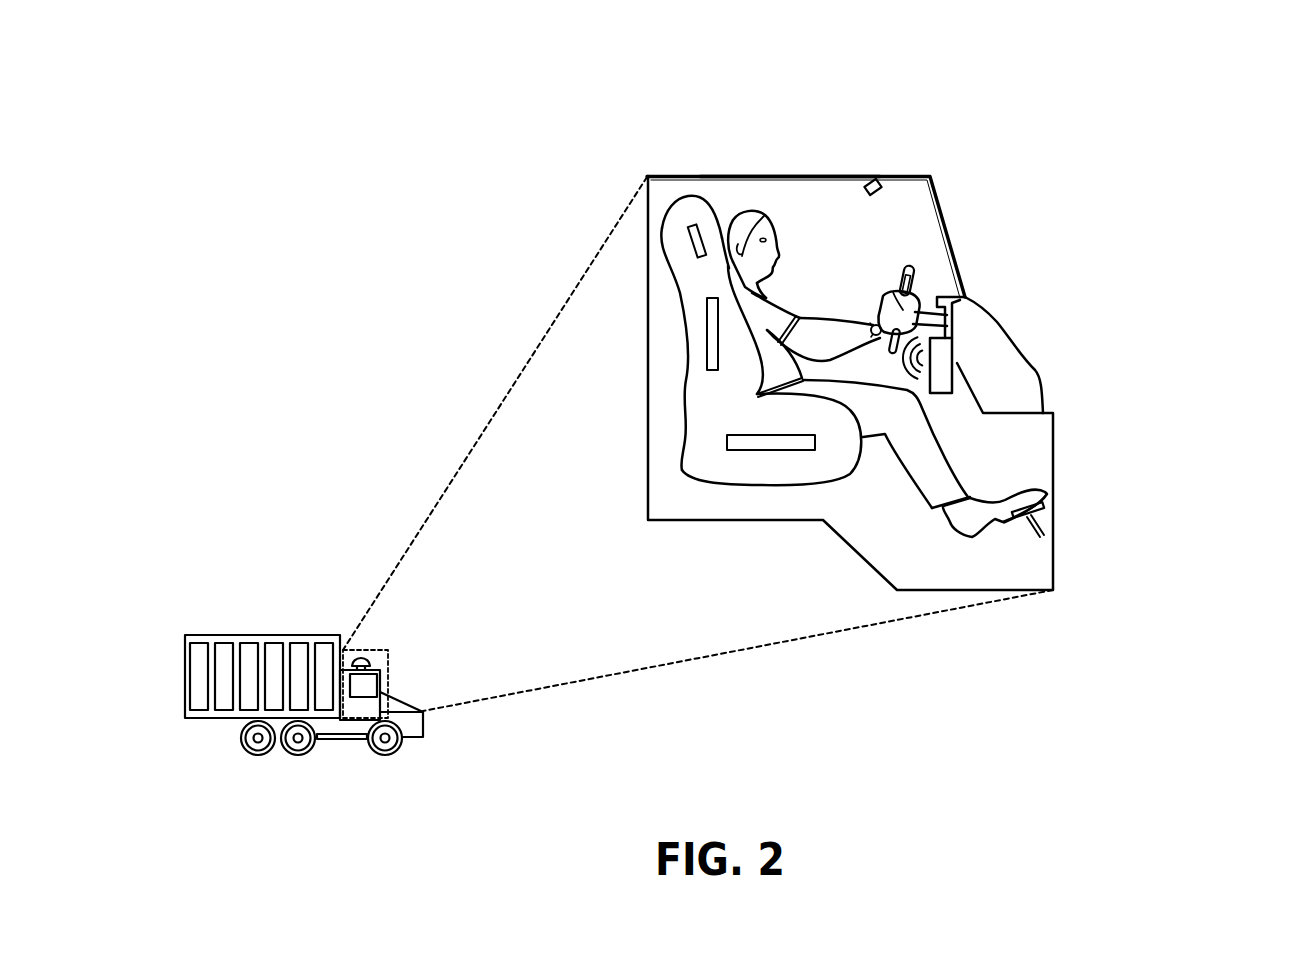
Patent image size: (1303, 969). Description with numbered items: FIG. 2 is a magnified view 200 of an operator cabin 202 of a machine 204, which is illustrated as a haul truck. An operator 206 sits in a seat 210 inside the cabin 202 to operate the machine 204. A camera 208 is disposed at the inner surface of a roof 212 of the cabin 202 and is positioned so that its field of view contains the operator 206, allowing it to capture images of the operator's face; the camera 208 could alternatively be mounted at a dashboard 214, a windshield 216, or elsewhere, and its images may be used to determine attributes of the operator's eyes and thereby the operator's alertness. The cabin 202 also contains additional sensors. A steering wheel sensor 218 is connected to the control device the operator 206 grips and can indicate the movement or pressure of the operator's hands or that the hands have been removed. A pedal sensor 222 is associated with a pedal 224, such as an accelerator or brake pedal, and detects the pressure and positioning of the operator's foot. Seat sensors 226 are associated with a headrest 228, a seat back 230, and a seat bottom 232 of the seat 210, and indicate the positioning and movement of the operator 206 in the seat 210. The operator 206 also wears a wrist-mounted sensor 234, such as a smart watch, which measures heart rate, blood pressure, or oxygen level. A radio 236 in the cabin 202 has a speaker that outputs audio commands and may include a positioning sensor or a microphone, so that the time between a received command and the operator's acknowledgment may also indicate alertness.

The magnified view 200 is at (1125, 148).
The operator cabin 202 is at (917, 199).
The machine 204 is at (285, 642).
The operator 206 is at (750, 213).
The camera 208 is at (877, 180).
The seat 210 is at (694, 362).
The roof 212 is at (713, 177).
The dashboard 214 is at (948, 312).
The windshield 216 is at (992, 251).
The steering wheel sensor 218 is at (955, 302).
The pedal sensor 222 is at (1047, 510).
The pedal 224 is at (1048, 502).
The seat sensor 226 is at (702, 248).
The headrest 228 is at (685, 213).
The seat back 230 is at (695, 327).
The seat bottom 232 is at (695, 463).
The wrist-mounted sensor 234 is at (882, 330).
The radio 236 is at (952, 357).